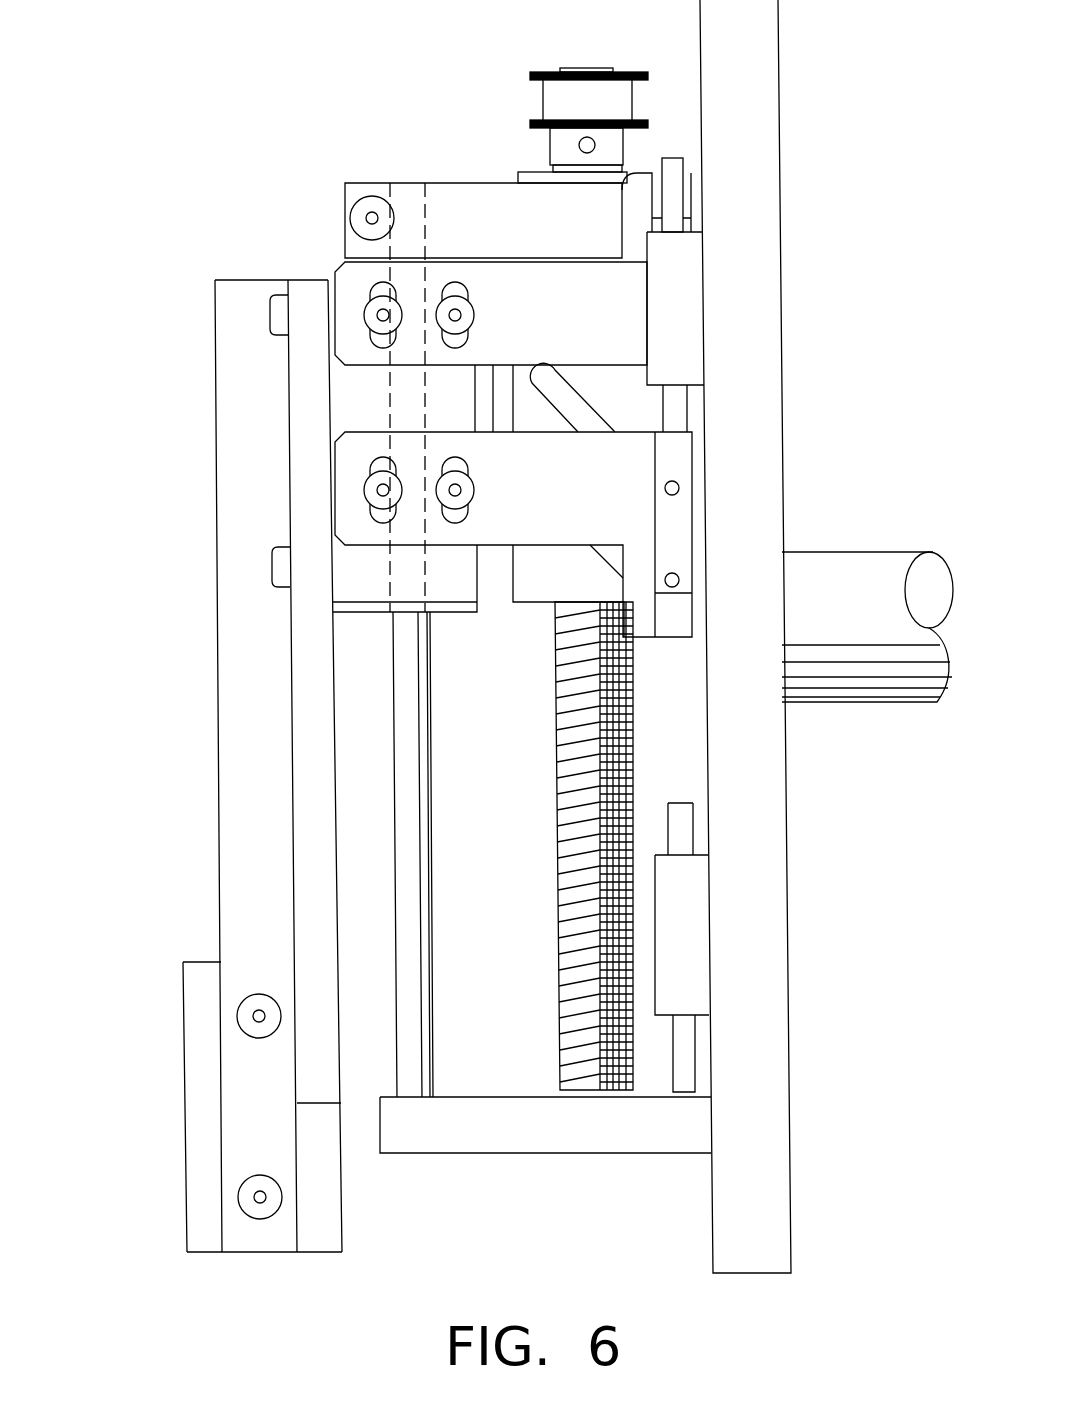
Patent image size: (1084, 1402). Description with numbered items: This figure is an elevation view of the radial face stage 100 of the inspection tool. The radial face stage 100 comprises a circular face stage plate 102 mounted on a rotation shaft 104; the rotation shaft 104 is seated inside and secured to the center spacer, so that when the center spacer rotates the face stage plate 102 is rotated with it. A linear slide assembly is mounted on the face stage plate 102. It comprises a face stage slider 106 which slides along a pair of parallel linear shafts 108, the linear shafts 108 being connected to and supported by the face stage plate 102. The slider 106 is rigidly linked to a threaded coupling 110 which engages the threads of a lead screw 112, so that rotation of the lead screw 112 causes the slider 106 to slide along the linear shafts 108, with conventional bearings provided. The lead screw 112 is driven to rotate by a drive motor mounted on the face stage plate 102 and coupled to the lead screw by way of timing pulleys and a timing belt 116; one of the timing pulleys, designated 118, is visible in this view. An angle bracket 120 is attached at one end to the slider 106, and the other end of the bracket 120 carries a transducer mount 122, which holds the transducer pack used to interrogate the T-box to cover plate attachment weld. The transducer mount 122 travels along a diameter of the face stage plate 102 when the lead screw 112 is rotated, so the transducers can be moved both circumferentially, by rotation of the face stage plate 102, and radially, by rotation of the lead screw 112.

The radial face stage 100 is at (108, 1230).
The face stage plate 102 is at (791, 1185).
The rotation shaft 104 is at (827, 570).
The face stage slider 106 is at (457, 614).
The linear shafts 108 is at (434, 948).
The threaded coupling 110 is at (642, 405).
The lead screw 112 is at (555, 778).
The timing belt 116 is at (543, 97).
The timing pulley 118 is at (530, 72).
The angle bracket 120 is at (262, 1252).
The transducer mount 122 is at (183, 1055).